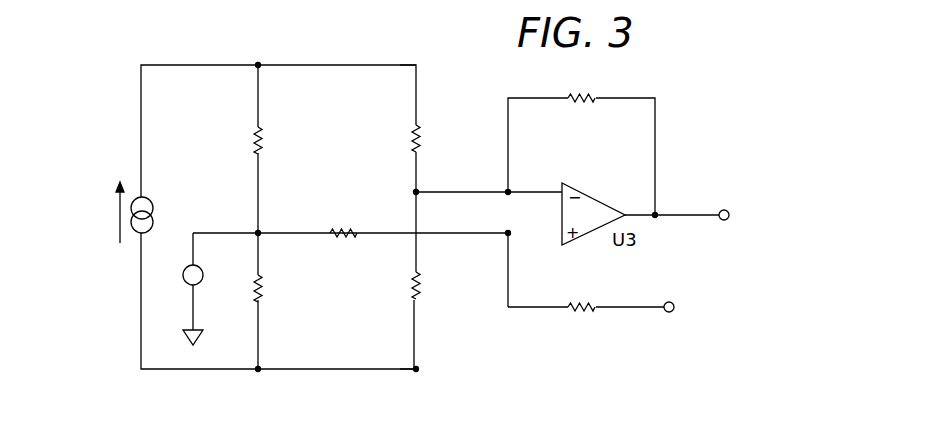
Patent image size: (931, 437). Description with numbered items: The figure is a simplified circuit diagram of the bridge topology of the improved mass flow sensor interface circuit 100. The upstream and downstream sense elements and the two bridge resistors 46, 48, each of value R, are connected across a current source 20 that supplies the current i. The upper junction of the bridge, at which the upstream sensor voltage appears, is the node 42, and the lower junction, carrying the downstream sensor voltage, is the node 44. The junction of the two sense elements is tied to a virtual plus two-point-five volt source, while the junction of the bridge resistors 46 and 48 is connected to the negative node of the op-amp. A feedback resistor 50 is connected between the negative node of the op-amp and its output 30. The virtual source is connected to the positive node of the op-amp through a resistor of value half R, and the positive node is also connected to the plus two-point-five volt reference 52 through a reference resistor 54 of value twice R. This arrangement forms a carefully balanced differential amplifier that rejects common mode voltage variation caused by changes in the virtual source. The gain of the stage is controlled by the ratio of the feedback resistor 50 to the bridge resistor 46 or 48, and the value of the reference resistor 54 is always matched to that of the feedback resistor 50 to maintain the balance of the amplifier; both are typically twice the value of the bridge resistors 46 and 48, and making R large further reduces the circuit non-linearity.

The measurement circuit 100 is at (118, 63).
The current source 20 is at (130, 244).
The upper voltage node V_U 42 is at (441, 50).
The lower voltage node V_D 44 is at (451, 370).
The bridge resistor 46 is at (406, 140).
The bridge resistor 48 is at (406, 286).
The feedback resistor 50 is at (583, 110).
The output terminal E_OUT 30 is at (750, 181).
The +2.5V REF 52 is at (722, 290).
The reference resistor 54 is at (578, 320).